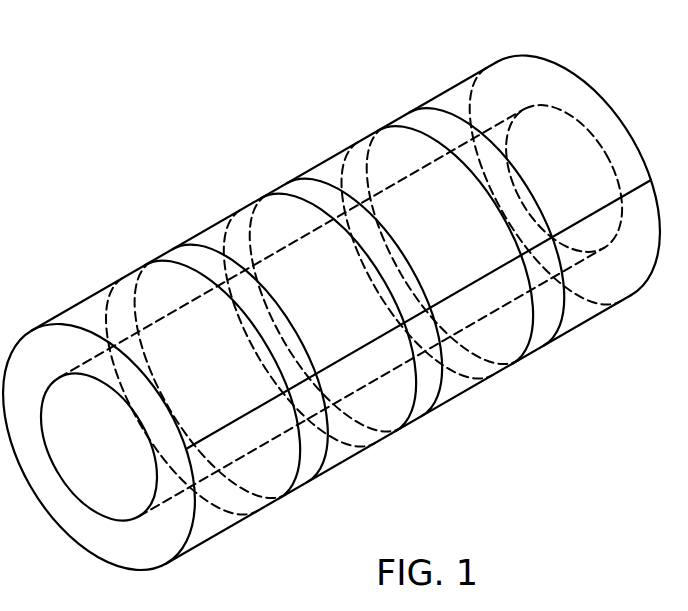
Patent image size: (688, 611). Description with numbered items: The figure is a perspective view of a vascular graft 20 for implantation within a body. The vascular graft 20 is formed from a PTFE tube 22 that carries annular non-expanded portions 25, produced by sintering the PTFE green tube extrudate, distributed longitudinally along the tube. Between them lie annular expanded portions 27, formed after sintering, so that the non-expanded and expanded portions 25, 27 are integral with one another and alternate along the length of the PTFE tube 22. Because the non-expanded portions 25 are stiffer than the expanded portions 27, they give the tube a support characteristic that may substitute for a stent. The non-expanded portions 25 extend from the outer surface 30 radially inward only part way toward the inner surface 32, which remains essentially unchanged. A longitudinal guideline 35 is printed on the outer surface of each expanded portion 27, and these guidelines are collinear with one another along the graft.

The vascular graft 20 is at (315, 317).
The PTFE tube 22 is at (538, 56).
The non-expanded portions 25 is at (182, 261).
The expanded portions 27 is at (218, 231).
The outer surface 30 is at (566, 298).
The inner surface 32 is at (88, 484).
The longitudinal guideline 35 is at (362, 351).